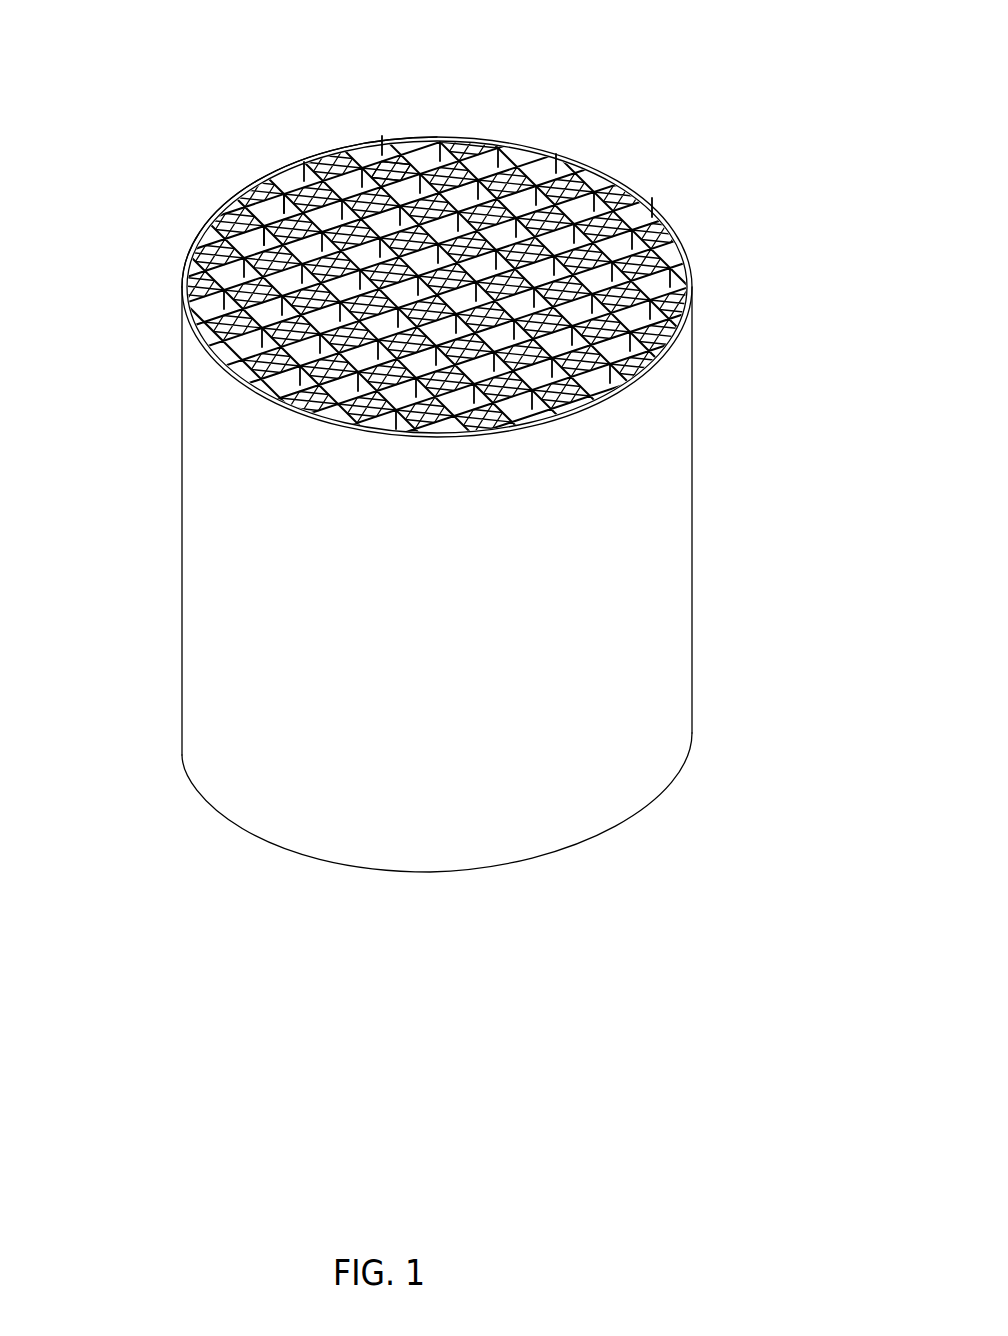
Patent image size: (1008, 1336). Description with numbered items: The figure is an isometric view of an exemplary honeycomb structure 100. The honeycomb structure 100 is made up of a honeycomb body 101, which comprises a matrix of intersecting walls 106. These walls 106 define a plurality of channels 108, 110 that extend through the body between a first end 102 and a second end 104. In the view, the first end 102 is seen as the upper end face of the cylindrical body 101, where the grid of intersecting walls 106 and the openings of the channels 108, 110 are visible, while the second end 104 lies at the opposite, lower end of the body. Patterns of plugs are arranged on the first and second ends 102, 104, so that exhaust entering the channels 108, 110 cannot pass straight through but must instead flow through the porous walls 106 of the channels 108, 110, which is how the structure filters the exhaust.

The honeycomb structure 100 is at (713, 95).
The honeycomb body 101 is at (204, 288).
The first end 102 is at (667, 240).
The second end 104 is at (563, 848).
The intersecting walls 106 is at (551, 186).
The channels 108 is at (318, 204).
The channels 110 is at (270, 192).